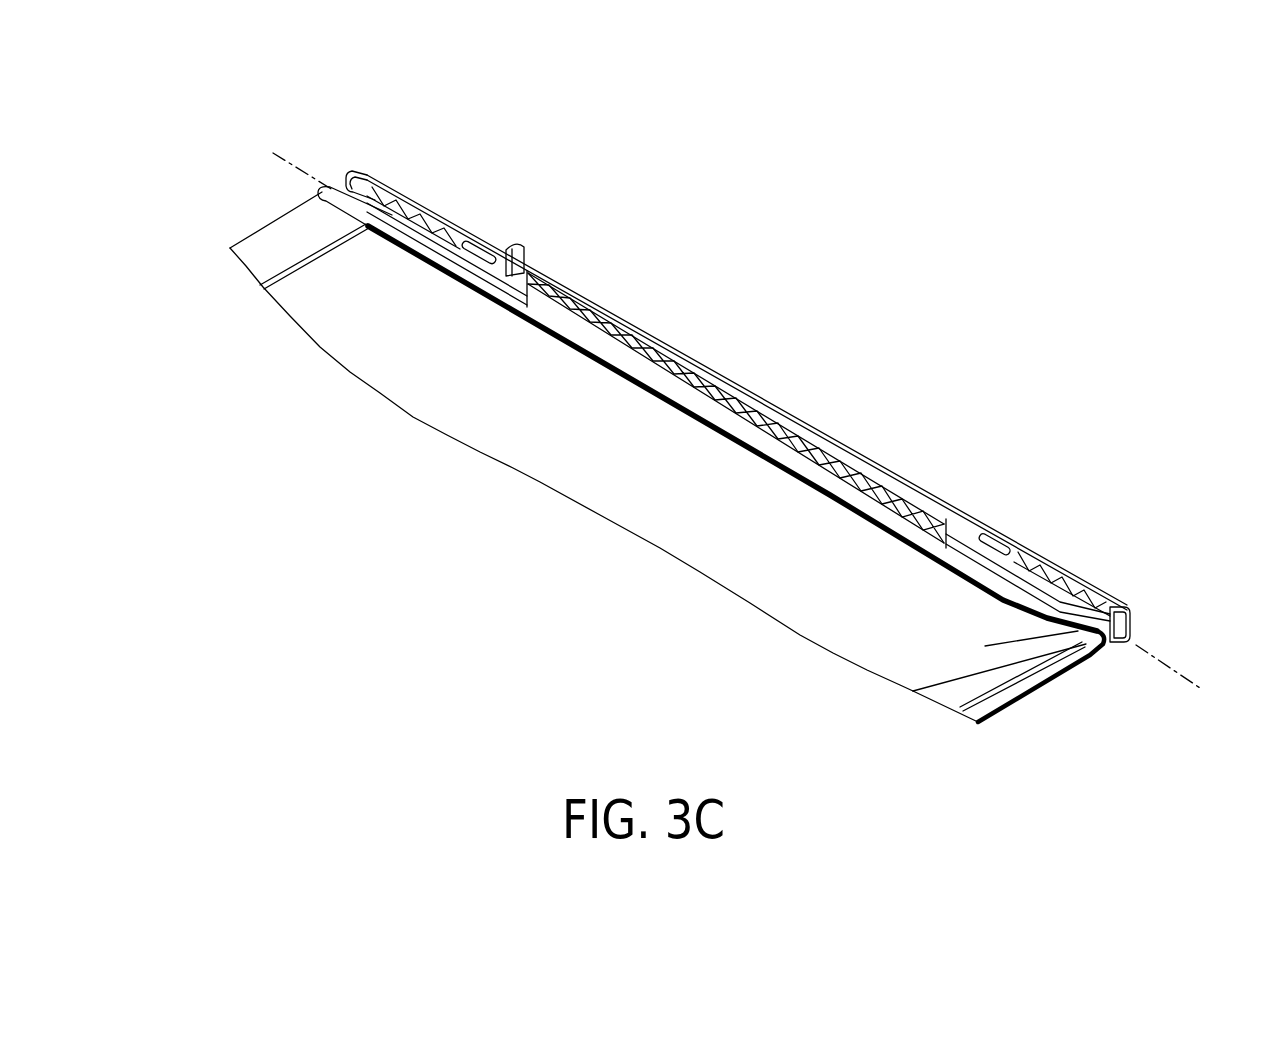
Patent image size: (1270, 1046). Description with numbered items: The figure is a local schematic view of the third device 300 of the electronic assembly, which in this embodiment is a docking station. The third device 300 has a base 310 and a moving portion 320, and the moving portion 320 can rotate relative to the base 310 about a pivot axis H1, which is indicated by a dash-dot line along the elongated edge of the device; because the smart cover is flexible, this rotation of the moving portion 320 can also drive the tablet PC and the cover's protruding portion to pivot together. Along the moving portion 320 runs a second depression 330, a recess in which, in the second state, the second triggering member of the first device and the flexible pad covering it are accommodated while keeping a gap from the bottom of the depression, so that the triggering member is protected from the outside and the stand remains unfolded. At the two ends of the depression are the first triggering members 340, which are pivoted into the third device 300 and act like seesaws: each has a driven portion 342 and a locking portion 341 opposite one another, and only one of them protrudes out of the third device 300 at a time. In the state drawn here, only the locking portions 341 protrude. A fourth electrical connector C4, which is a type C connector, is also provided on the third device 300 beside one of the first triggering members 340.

The third device 300 is at (667, 454).
The base 310 is at (297, 233).
The moving portion 320 is at (540, 315).
The second depression 330 is at (564, 302).
The first triggering member 340 is at (750, 363).
The locking portion 341 is at (486, 240).
The driven portion 342 is at (380, 198).
The fourth electrical connector C4 is at (512, 243).
The pivot axis H1 is at (1168, 672).